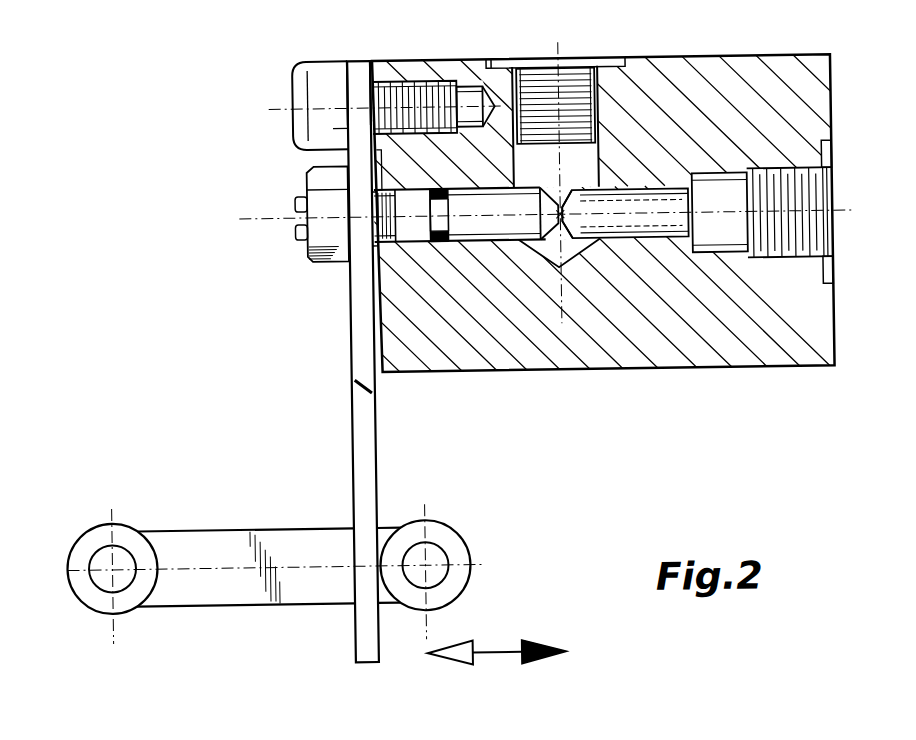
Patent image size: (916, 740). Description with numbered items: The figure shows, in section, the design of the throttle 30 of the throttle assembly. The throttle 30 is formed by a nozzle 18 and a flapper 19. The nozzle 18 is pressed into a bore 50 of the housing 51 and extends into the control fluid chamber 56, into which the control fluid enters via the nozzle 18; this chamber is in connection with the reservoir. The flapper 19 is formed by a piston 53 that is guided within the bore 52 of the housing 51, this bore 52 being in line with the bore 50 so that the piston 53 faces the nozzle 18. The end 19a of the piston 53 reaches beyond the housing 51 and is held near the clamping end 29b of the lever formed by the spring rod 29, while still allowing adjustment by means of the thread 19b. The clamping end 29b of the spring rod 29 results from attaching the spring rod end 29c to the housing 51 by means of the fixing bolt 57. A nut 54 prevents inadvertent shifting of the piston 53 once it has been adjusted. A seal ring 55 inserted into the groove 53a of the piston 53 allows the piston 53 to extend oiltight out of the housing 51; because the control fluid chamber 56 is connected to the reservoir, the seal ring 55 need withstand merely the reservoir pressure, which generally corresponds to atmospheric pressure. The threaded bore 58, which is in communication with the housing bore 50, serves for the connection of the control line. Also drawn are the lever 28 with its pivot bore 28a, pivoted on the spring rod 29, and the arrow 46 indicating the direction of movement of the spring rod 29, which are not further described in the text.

The nozzle 18 is at (645, 176).
The flapper 19 is at (551, 199).
The piston end 19a is at (295, 235).
The thread 19b is at (370, 252).
The lever 28 is at (215, 541).
The pivot bore 28a is at (421, 563).
The spring rod 29 is at (347, 446).
The clamping end 29b is at (378, 68).
The spring rod end 29c is at (355, 82).
The throttle 30 is at (570, 200).
The direction of movement 46 is at (488, 649).
The bore 50 is at (690, 167).
The housing 51 is at (499, 358).
The bore 52 is at (485, 190).
The piston 53 is at (487, 230).
The groove 53a is at (435, 243).
The nut 54 is at (318, 181).
The seal ring 55 is at (439, 187).
The control fluid chamber 56 is at (560, 153).
The fixing bolt 57 is at (302, 94).
The threaded bore 58 is at (830, 172).